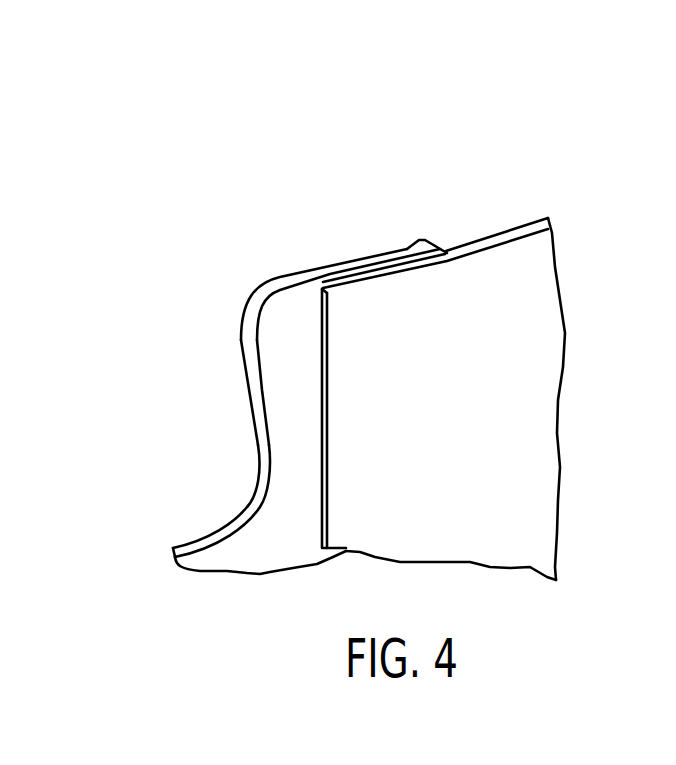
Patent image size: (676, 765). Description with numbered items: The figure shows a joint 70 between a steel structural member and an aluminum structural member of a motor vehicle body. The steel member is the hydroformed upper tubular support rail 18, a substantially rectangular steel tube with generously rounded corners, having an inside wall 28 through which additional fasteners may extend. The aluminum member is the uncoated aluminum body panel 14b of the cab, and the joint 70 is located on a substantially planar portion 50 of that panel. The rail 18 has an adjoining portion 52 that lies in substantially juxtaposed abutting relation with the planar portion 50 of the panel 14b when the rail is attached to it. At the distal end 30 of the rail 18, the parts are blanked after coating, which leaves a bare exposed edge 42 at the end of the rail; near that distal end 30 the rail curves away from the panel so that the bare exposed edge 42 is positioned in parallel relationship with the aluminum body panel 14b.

The joint 70 is at (303, 214).
The distal end 30 is at (360, 302).
The planar portion 50 is at (413, 250).
The adjoining portion 52 is at (378, 280).
The inside wall 28 is at (473, 275).
The upper tubular support rail 18 is at (542, 261).
The bare exposed edge 42 is at (322, 318).
The uncoated aluminum body panel 14b is at (262, 555).